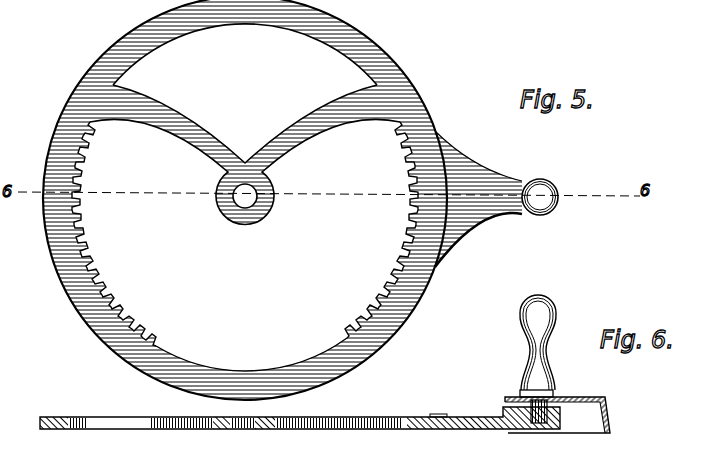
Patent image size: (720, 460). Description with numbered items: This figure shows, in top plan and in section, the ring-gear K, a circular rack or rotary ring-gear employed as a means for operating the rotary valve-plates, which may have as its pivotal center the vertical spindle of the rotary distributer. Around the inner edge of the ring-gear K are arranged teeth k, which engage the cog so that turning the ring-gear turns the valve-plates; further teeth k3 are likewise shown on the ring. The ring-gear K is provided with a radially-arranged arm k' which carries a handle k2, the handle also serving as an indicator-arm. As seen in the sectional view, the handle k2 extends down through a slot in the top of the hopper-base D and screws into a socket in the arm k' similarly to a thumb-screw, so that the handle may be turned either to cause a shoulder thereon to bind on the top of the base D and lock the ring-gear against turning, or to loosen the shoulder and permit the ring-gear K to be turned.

In FIG. 5, the ring-gear K is at (282, 200).
In FIG. 6, the ring-gear K is at (300, 411).
In FIG. 5, the teeth k is at (381, 230).
In FIG. 6, the teeth k is at (237, 412).
In FIG. 5, the arm k' is at (478, 199).
In FIG. 6, the arm k' is at (445, 406).
In FIG. 5, the handle k2 is at (549, 171).
In FIG. 6, the handle k2 is at (552, 316).
In FIG. 5, the teeth of wheel k3 is at (120, 273).
In FIG. 6, the base D is at (568, 408).